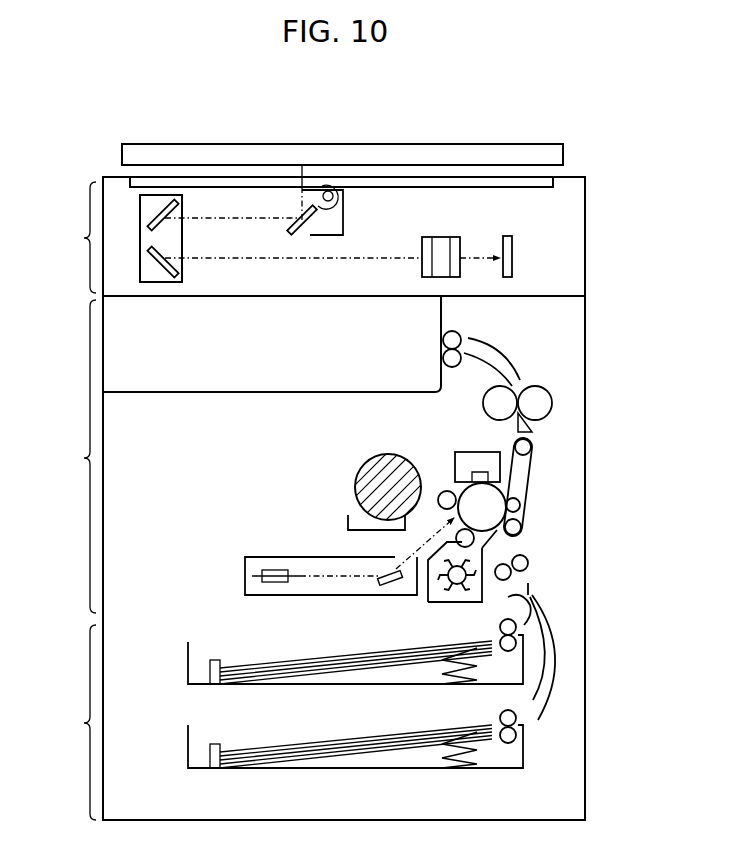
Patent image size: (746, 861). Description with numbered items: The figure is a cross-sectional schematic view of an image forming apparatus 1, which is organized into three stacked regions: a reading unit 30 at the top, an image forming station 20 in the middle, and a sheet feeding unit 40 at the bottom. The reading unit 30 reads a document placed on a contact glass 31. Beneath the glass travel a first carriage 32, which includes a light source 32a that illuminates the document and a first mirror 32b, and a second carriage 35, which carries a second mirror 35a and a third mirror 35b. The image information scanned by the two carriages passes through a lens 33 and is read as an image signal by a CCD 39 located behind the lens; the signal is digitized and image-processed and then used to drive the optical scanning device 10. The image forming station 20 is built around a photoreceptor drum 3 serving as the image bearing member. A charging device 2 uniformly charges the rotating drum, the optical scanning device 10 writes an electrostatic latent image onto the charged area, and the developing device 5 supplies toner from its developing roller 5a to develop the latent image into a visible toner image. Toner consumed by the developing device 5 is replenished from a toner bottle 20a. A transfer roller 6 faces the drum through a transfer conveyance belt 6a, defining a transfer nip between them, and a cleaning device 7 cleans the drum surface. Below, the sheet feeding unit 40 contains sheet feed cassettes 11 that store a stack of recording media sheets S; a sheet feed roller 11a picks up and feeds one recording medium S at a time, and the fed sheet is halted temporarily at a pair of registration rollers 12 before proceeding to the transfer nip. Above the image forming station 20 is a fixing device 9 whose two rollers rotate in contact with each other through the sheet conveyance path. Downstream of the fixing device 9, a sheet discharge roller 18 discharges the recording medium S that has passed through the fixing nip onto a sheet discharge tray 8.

The image forming apparatus 1 is at (542, 115).
The reading unit 30 is at (71, 237).
The image forming station 20 is at (71, 456).
The sheet feeding unit 40 is at (71, 722).
The contact glass 31 is at (322, 174).
The second carriage 35 is at (140, 200).
The second mirror 35a is at (158, 198).
The third mirror 35b is at (146, 264).
The first carriage 32 is at (345, 226).
The light source 32a is at (343, 203).
The first mirror 32b is at (310, 236).
The lens 33 is at (440, 236).
The CCD 39 is at (512, 240).
The sheet discharge tray 8 is at (250, 390).
The sheet discharge roller 18 is at (463, 337).
The fixing device 9 is at (529, 379).
The cleaning device 7 is at (473, 450).
The charging device 2 is at (447, 490).
The photoreceptor drum 3 is at (475, 517).
The toner bottle 20a is at (355, 489).
The transfer conveyance belt 6a is at (529, 480).
The transfer roller 6 is at (522, 498).
The developing roller 5a is at (473, 548).
The developing device 5 is at (443, 606).
The optical scanning device 10 is at (258, 598).
The registration rollers 12 is at (530, 562).
The sheet feed cassette 11 is at (186, 669).
The recording medium S is at (345, 650).
The sheet feed roller 11a is at (516, 624).